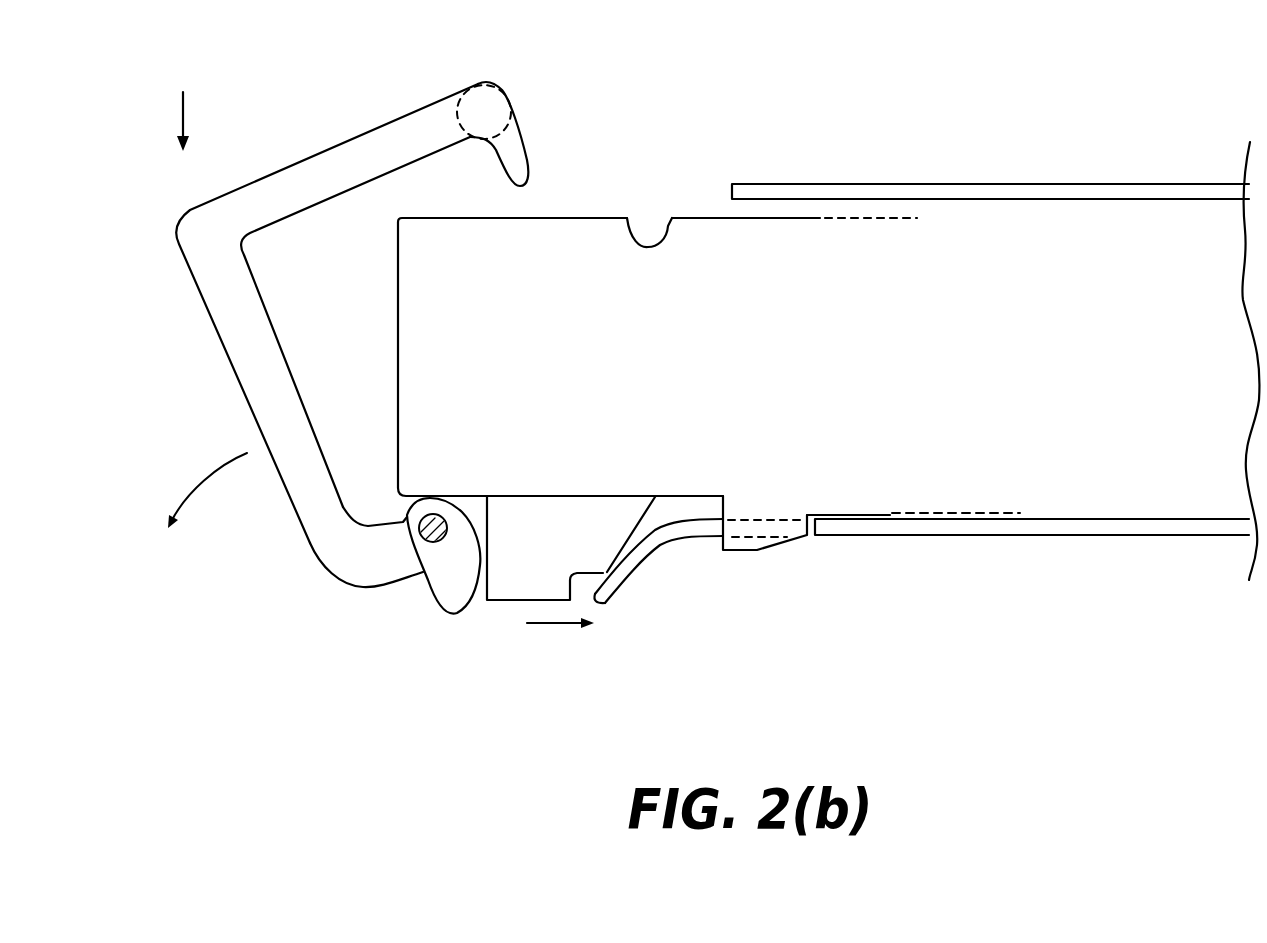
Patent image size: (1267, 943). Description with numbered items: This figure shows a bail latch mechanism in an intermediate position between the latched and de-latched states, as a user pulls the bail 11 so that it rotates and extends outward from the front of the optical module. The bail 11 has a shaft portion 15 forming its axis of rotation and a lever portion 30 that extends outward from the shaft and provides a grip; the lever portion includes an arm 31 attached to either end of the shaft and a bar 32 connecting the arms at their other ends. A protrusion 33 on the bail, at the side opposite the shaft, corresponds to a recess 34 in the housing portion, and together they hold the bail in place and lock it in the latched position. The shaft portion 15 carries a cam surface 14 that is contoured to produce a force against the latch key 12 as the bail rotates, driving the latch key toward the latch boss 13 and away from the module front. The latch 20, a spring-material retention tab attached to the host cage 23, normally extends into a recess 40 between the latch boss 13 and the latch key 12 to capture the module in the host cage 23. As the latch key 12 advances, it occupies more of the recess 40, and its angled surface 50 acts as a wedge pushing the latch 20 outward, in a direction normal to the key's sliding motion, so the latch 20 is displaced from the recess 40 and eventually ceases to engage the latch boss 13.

The bail 11 is at (182, 103).
The latch key 12 is at (532, 526).
The latch boss 13 is at (747, 517).
The cam surface 14 is at (478, 547).
The shaft portion 15 is at (430, 540).
The latch 20 is at (885, 537).
The host cage 23 is at (1119, 201).
The lever portion 30 is at (309, 346).
The arm 31 is at (250, 318).
The bar 32 is at (497, 100).
The protrusion 33 is at (518, 153).
The recess 34 is at (667, 237).
The recess 40 is at (673, 520).
The surface 50 is at (625, 540).